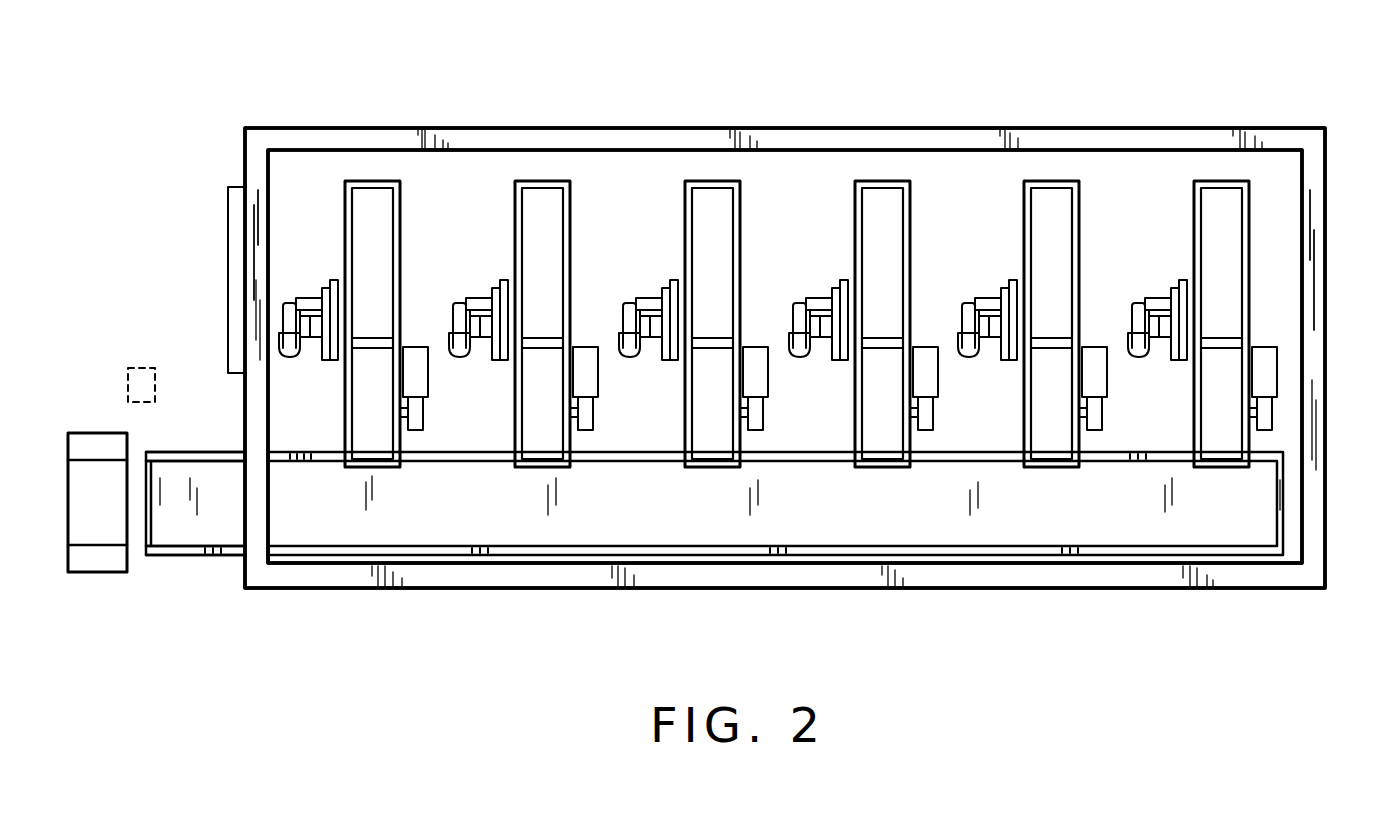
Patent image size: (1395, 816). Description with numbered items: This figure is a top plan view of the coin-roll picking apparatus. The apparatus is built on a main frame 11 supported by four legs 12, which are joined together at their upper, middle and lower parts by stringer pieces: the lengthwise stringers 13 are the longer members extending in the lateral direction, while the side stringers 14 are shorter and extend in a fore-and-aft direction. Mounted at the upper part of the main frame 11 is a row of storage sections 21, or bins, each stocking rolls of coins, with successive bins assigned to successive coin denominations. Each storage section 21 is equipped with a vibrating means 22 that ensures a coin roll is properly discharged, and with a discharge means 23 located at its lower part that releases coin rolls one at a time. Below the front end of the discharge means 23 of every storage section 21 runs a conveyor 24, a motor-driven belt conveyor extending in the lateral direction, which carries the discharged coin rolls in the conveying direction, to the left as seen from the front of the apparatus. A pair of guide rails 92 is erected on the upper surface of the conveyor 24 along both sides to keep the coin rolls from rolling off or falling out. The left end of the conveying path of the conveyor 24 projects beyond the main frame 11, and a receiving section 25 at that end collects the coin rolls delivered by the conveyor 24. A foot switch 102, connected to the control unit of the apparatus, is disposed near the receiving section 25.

The main frame 11 is at (1325, 263).
The legs 12 is at (256, 126).
The lengthwise stringers 13 is at (1262, 127).
The side stringers 14 is at (244, 158).
The storage sections 21 is at (375, 181).
The vibrating means 22 is at (297, 355).
The discharge means 23 is at (416, 432).
The conveyor 24 is at (175, 480).
The receiving section 25 is at (95, 432).
The guide rails 92 is at (215, 451).
The foot switch 102 is at (141, 368).